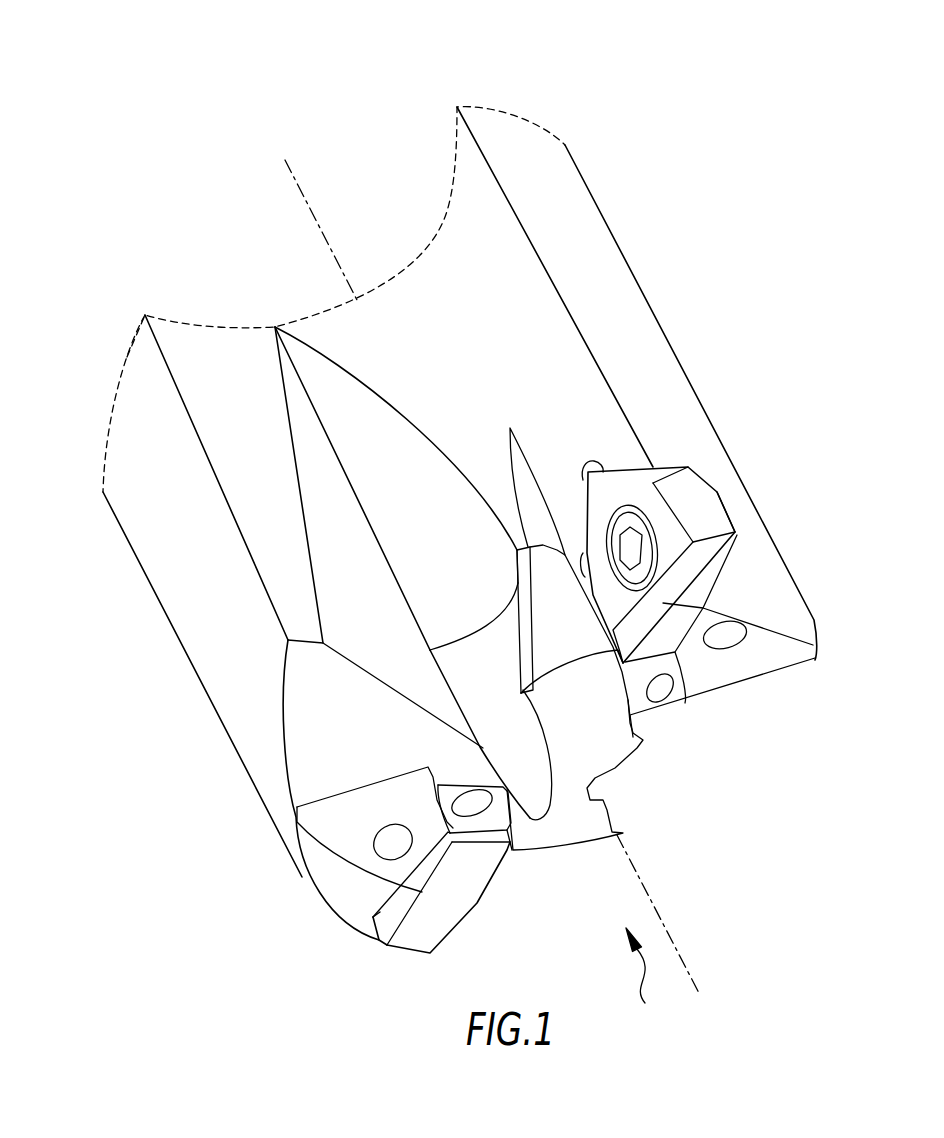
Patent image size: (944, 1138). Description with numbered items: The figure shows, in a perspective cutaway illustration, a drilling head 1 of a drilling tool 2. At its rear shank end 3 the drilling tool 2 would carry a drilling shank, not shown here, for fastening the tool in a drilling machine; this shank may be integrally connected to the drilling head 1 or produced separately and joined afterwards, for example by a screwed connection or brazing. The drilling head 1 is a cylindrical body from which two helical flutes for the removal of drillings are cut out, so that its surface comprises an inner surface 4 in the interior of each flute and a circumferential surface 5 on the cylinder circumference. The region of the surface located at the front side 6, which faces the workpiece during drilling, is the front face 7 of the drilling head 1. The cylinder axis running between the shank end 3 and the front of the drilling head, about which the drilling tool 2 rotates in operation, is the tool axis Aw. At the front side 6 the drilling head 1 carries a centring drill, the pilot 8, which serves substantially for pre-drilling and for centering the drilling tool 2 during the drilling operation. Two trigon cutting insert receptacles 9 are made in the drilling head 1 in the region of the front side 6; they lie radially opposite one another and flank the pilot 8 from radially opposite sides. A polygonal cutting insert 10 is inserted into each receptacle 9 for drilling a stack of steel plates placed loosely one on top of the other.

The drilling head 1 is at (460, 524).
The drilling tool 2 is at (460, 524).
The rear shank end 3 is at (334, 250).
The inner surface 4 is at (455, 218).
The circumferential surface 5 is at (620, 282).
The front side 6 is at (640, 979).
The front face 7 is at (332, 880).
The pilot 8 is at (567, 832).
The receptacle 9 is at (702, 477).
The cutting insert 10 is at (722, 550).
The tool axis Aw is at (304, 198).